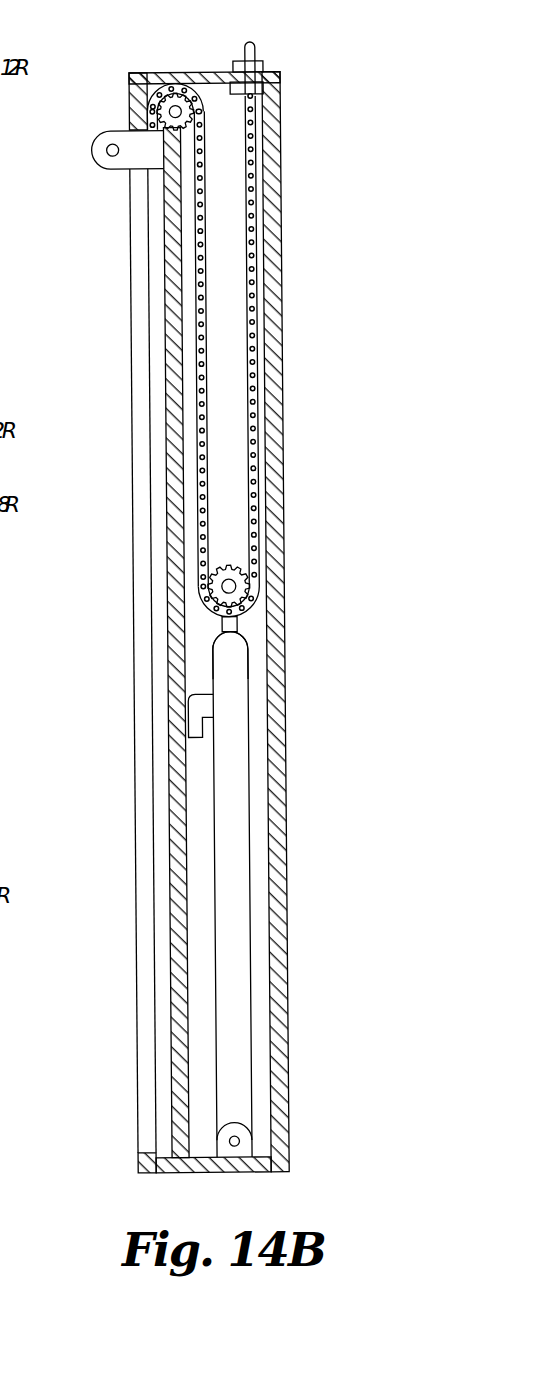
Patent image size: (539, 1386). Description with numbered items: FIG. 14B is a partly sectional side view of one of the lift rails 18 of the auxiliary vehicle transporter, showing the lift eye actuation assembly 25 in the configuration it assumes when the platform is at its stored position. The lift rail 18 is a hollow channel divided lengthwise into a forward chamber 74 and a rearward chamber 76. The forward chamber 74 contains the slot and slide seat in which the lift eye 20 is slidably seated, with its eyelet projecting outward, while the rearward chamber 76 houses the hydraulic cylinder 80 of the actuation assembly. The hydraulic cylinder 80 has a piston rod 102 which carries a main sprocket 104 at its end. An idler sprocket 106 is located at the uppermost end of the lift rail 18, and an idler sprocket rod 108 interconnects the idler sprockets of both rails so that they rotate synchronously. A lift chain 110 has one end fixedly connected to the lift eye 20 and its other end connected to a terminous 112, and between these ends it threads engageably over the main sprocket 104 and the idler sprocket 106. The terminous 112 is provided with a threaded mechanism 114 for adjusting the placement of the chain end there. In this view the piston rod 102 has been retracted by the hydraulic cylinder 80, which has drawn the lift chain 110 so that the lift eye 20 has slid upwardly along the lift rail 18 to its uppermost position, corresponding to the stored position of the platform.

The lift rail 18 is at (280, 360).
The lift eye 20 is at (97, 170).
The lift eye actuation assembly 25 is at (245, 633).
The forward chamber 74 is at (152, 617).
The rearward chamber 76 is at (192, 645).
The hydraulic cylinder 80 is at (241, 925).
The piston rod 102 is at (240, 627).
The main sprocket 104 is at (239, 587).
The idler sprocket 106 is at (187, 90).
The idler sprocket rod 108 is at (172, 93).
The lift chain 110 is at (254, 492).
The terminous 112 is at (268, 63).
The threaded mechanism 114 is at (263, 50).